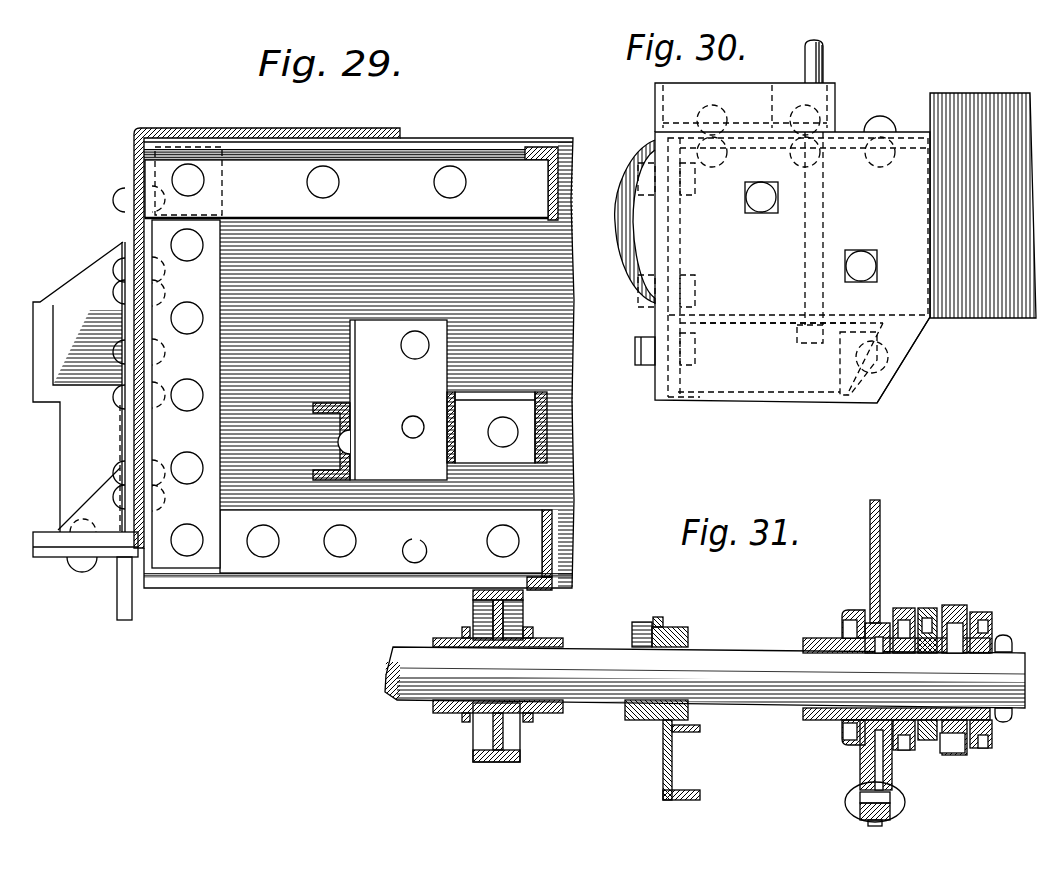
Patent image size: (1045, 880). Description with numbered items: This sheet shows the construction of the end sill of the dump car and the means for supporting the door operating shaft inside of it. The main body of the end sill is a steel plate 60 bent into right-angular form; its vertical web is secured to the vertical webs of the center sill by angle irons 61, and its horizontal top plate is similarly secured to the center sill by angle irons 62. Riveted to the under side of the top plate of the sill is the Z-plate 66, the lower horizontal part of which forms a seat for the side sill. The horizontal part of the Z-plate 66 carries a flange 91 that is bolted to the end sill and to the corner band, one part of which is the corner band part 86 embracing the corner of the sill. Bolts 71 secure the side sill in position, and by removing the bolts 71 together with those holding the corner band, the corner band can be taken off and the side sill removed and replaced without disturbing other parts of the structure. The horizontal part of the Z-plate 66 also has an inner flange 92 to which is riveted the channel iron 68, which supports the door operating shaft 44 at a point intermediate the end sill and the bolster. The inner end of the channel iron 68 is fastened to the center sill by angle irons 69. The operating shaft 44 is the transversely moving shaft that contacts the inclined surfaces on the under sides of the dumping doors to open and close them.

In FIG. 29, the steel plate 60 is at (200, 128).
In FIG. 30, the steel plate 60 is at (655, 134).
In FIG. 29, the angle irons 61 is at (186, 377).
In FIG. 29, the angle irons 62 is at (346, 360).
In FIG. 30, the Z-plate 66 is at (747, 322).
In FIG. 29, the channel iron 68 is at (340, 403).
In FIG. 30, the channel iron 68 is at (851, 340).
In FIG. 29, the angle irons 69 is at (467, 434).
In FIG. 30, the bolts 71 is at (826, 58).
In FIG. 30, the corner band part 86 is at (872, 238).
In FIG. 30, the flange 91 is at (680, 370).
In FIG. 30, the inner flange 92 is at (890, 333).
In FIG. 31, the operating shaft 44 is at (766, 620).